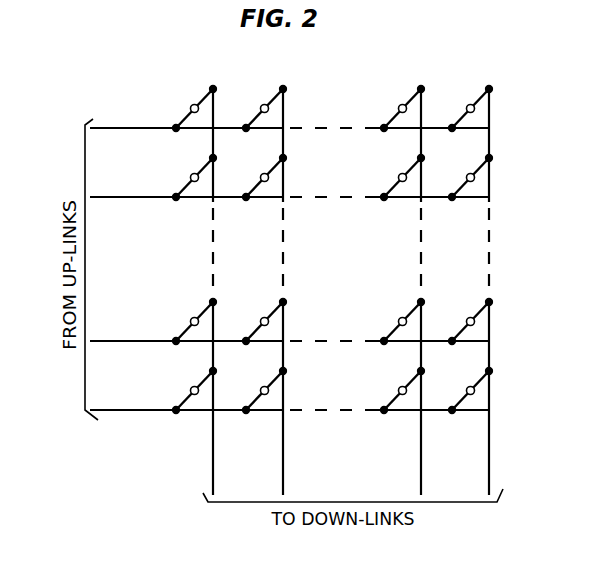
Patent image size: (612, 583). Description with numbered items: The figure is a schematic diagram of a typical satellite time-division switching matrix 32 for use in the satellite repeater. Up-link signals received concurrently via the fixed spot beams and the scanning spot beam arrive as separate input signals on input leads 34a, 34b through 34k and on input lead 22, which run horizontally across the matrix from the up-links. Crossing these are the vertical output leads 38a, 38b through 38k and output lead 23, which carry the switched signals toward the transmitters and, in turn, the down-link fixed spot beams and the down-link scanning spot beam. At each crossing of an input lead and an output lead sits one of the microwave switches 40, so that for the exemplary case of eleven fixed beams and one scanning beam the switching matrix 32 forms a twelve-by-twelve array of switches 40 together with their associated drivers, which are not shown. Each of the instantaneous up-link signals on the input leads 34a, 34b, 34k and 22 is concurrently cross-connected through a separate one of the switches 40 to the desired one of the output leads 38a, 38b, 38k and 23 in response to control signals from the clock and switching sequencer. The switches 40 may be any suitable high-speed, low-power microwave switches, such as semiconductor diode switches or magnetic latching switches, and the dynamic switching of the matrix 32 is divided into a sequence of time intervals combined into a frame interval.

The time-division switching matrix 32 is at (325, 73).
The input lead 34a is at (117, 127).
The input lead 34b is at (117, 196).
The input lead 34k is at (114, 340).
The input lead 22 is at (117, 409).
The output lead 38a is at (212, 462).
The output lead 38b is at (282, 462).
The output lead 38k is at (420, 462).
The output lead 23 is at (488, 462).
The microwave switch 40 is at (261, 104).